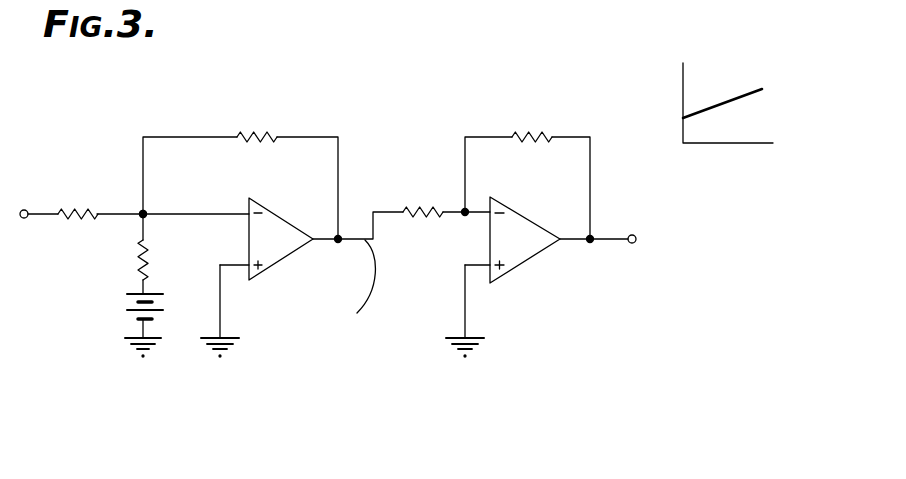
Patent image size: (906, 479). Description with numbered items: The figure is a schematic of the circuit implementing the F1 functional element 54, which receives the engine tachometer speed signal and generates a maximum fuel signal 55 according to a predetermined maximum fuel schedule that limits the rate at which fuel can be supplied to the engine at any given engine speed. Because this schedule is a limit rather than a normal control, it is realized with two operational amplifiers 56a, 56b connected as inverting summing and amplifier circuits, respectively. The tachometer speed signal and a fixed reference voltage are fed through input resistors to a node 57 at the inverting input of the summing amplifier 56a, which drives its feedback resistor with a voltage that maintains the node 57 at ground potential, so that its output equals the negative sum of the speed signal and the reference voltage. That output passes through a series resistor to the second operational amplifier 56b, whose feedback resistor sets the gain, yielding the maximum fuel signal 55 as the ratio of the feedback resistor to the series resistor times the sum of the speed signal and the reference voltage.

The F1 functional element 54 is at (392, 235).
The maximum fuel signal 55 is at (612, 238).
The operational amplifier 56a is at (283, 261).
The operational amplifier 56b is at (530, 260).
The node 57 is at (142, 212).